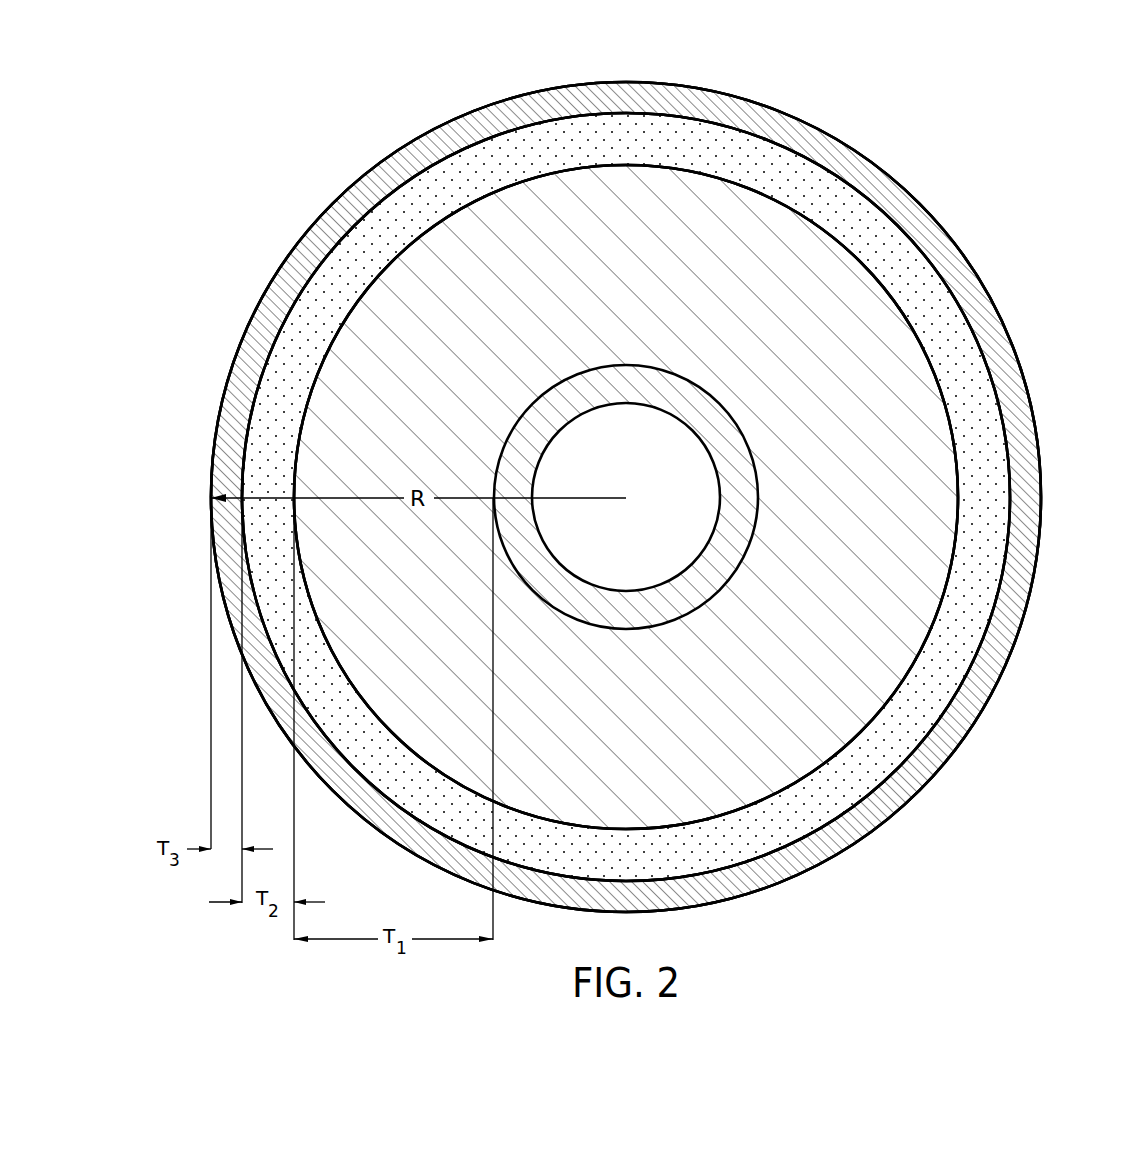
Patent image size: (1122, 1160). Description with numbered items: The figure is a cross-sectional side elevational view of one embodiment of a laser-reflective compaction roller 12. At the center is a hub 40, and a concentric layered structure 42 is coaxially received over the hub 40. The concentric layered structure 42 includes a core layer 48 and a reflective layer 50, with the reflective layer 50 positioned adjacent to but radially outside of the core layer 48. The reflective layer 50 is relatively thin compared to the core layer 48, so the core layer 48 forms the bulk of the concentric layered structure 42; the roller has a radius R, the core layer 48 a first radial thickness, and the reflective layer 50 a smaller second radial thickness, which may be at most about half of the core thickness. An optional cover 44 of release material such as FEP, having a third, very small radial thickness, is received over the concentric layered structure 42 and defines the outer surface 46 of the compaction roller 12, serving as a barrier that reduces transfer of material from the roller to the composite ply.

The compaction roller 12 is at (635, 496).
The hub 40 is at (529, 561).
The concentric layered structure 42 is at (626, 497).
The cover 44 is at (1008, 392).
The outer surface 46 is at (1040, 558).
The core layer 48 is at (941, 508).
The reflective layer 50 is at (985, 445).